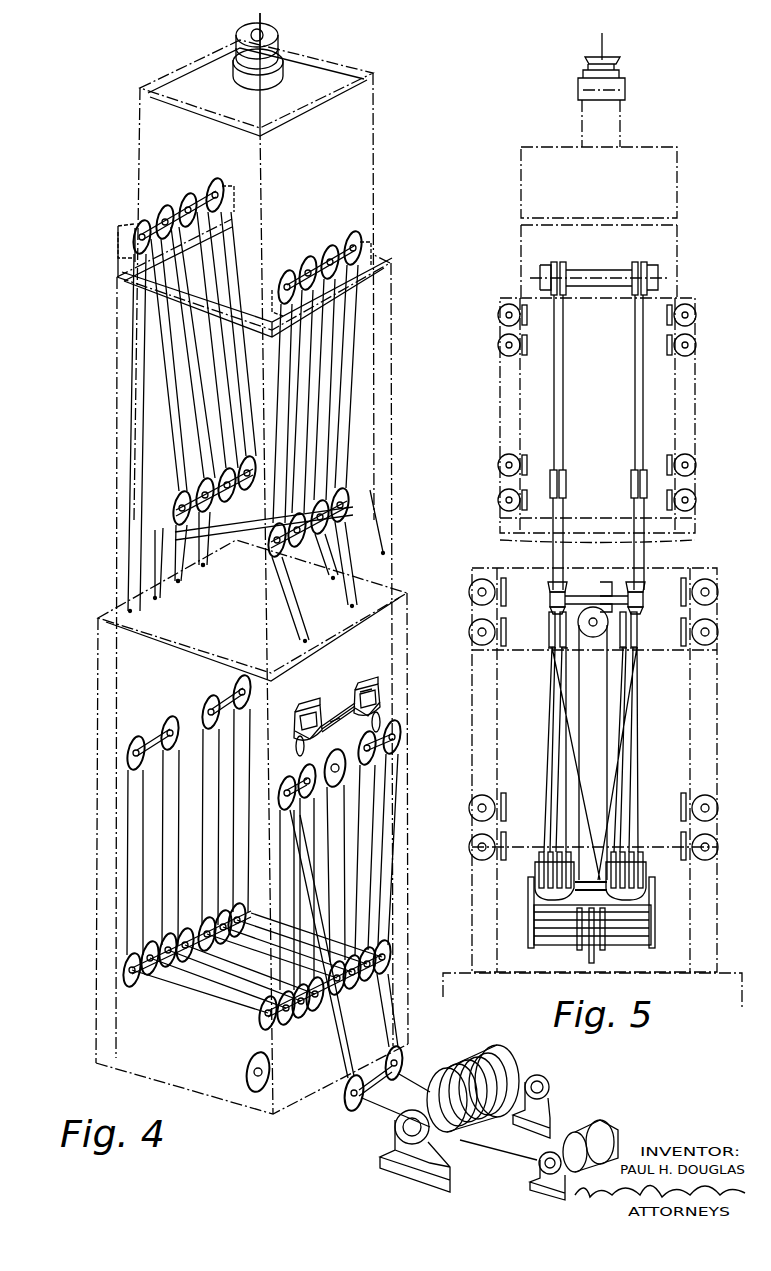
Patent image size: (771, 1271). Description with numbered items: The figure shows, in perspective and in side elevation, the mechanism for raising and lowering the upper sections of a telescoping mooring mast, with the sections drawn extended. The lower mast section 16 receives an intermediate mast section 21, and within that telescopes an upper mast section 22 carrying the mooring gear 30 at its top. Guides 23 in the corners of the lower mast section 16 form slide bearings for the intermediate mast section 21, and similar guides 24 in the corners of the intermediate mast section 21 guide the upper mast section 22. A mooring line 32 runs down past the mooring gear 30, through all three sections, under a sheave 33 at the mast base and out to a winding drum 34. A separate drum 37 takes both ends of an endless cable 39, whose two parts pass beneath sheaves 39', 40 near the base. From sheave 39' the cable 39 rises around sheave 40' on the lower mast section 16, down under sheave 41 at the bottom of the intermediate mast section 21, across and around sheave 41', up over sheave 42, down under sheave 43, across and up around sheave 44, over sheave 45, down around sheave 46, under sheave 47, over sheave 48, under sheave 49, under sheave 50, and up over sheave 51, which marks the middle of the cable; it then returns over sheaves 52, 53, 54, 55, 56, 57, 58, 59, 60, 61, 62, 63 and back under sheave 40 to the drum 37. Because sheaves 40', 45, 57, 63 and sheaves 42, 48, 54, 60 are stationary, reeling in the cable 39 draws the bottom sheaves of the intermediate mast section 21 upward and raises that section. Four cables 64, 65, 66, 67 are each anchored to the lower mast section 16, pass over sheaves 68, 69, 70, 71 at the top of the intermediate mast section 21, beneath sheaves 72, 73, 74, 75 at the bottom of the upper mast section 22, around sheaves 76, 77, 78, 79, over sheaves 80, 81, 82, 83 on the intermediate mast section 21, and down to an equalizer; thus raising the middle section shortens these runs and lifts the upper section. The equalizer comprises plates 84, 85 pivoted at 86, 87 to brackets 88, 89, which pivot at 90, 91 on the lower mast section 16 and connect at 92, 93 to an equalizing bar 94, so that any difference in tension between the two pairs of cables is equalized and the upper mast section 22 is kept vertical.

In FIG. 4, the lower mast section 16 is at (98, 763).
In FIG. 5, the lower mast section 16 is at (716, 889).
In FIG. 4, the intermediate mast section 21 is at (393, 366).
In FIG. 5, the intermediate mast section 21 is at (694, 528).
In FIG. 4, the upper mast section 22 is at (374, 126).
In FIG. 5, the upper mast section 22 is at (678, 178).
In FIG. 5, the guides 23 is at (470, 612).
In FIG. 5, the guides 24 is at (505, 332).
In FIG. 4, the mooring gear 30 is at (284, 60).
In FIG. 5, the mooring gear 30 is at (612, 115).
In FIG. 4, the mooring line 32 is at (262, 99).
In FIG. 5, the mooring line 32 is at (604, 40).
In FIG. 4, the sheave 33 is at (245, 1072).
In FIG. 5, the sheave 33 is at (595, 960).
In FIG. 4, the winding drum 34 is at (606, 1136).
In FIG. 4, the drum 37 is at (520, 1068).
In FIG. 5, the drum 37 is at (656, 935).
In FIG. 4, the endless cable 39 is at (366, 1026).
In FIG. 5, the endless cable 39 is at (591, 763).
In FIG. 4, the sheave 39' is at (365, 1108).
In FIG. 5, the sheave 39' is at (559, 937).
In FIG. 4, the sheave 40 is at (400, 1061).
In FIG. 5, the sheave 40 is at (632, 937).
In FIG. 4, the sheave 40' is at (303, 926).
In FIG. 5, the sheave 40' is at (529, 661).
In FIG. 4, the sheave 41 is at (278, 1026).
In FIG. 5, the sheave 41 is at (529, 849).
In FIG. 4, the sheave 41' is at (120, 970).
In FIG. 4, the sheave 42 is at (138, 738).
In FIG. 4, the sheave 43 is at (148, 950).
In FIG. 4, the sheave 44 is at (291, 1020).
In FIG. 5, the sheave 44 is at (548, 860).
In FIG. 4, the sheave 45 is at (308, 771).
In FIG. 5, the sheave 45 is at (556, 656).
In FIG. 4, the sheave 46 is at (308, 1006).
In FIG. 5, the sheave 46 is at (558, 870).
In FIG. 4, the sheave 47 is at (168, 941).
In FIG. 4, the sheave 48 is at (170, 718).
In FIG. 4, the sheave 49 is at (189, 958).
In FIG. 4, the sheave 50 is at (322, 995).
In FIG. 5, the sheave 50 is at (568, 888).
In FIG. 4, the sheave 51 is at (334, 787).
In FIG. 5, the sheave 51 is at (593, 638).
In FIG. 4, the sheave 52 is at (338, 961).
In FIG. 5, the sheave 52 is at (617, 888).
In FIG. 4, the sheave 53 is at (203, 928).
In FIG. 4, the sheave 54 is at (211, 697).
In FIG. 4, the sheave 55 is at (221, 913).
In FIG. 4, the sheave 56 is at (354, 956).
In FIG. 5, the sheave 56 is at (626, 872).
In FIG. 4, the sheave 57 is at (362, 752).
In FIG. 5, the sheave 57 is at (631, 656).
In FIG. 4, the sheave 58 is at (374, 960).
In FIG. 5, the sheave 58 is at (635, 860).
In FIG. 4, the sheave 59 is at (237, 905).
In FIG. 4, the sheave 60 is at (243, 678).
In FIG. 4, the sheave 61 is at (382, 522).
In FIG. 4, the sheave 62 is at (388, 950).
In FIG. 5, the sheave 62 is at (642, 852).
In FIG. 4, the sheave 63 is at (399, 736).
In FIG. 5, the sheave 63 is at (636, 652).
In FIG. 4, the cable 64 is at (131, 611).
In FIG. 5, the cable 64 is at (553, 400).
In FIG. 4, the cable 65 is at (157, 598).
In FIG. 5, the cable 65 is at (564, 400).
In FIG. 4, the cable 66 is at (180, 581).
In FIG. 5, the cable 66 is at (634, 400).
In FIG. 4, the cable 67 is at (205, 565).
In FIG. 5, the cable 67 is at (645, 400).
In FIG. 4, the sheave 68 is at (137, 228).
In FIG. 4, the sheave 69 is at (164, 212).
In FIG. 4, the sheave 70 is at (187, 200).
In FIG. 4, the sheave 71 is at (216, 185).
In FIG. 4, the sheave 72 is at (182, 524).
In FIG. 4, the sheave 73 is at (206, 511).
In FIG. 4, the sheave 74 is at (225, 500).
In FIG. 4, the sheave 75 is at (246, 458).
In FIG. 4, the sheave 76 is at (279, 558).
In FIG. 5, the sheave 76 is at (552, 470).
In FIG. 4, the sheave 77 is at (297, 548).
In FIG. 5, the sheave 77 is at (565, 470).
In FIG. 4, the sheave 78 is at (324, 535).
In FIG. 5, the sheave 78 is at (632, 470).
In FIG. 4, the sheave 79 is at (343, 523).
In FIG. 5, the sheave 79 is at (646, 470).
In FIG. 4, the sheave 80 is at (285, 275).
In FIG. 5, the sheave 80 is at (552, 270).
In FIG. 4, the sheave 81 is at (308, 262).
In FIG. 5, the sheave 81 is at (564, 268).
In FIG. 4, the sheave 82 is at (331, 250).
In FIG. 4, the sheave 83 is at (354, 236).
In FIG. 5, the sheave 83 is at (645, 268).
In FIG. 4, the equalizer plate 84 is at (304, 706).
In FIG. 5, the equalizer plate 84 is at (560, 583).
In FIG. 4, the equalizer plate 85 is at (366, 684).
In FIG. 5, the equalizer plate 85 is at (640, 583).
In FIG. 4, the pivot 86 is at (312, 708).
In FIG. 5, the pivot 86 is at (550, 597).
In FIG. 4, the pivot 87 is at (379, 690).
In FIG. 5, the pivot 87 is at (643, 597).
In FIG. 4, the bracket 88 is at (300, 733).
In FIG. 5, the bracket 88 is at (551, 607).
In FIG. 4, the bracket 89 is at (381, 697).
In FIG. 5, the bracket 89 is at (643, 608).
In FIG. 4, the pivot 90 is at (337, 716).
In FIG. 5, the pivot 90 is at (580, 588).
In FIG. 4, the pivot 91 is at (362, 692).
In FIG. 5, the pivot 91 is at (612, 583).
In FIG. 4, the pivot 92 is at (297, 748).
In FIG. 5, the pivot 92 is at (548, 640).
In FIG. 4, the pivot 93 is at (381, 710).
In FIG. 5, the pivot 93 is at (638, 640).
In FIG. 4, the equalizing bar 94 is at (334, 725).
In FIG. 5, the equalizing bar 94 is at (611, 596).